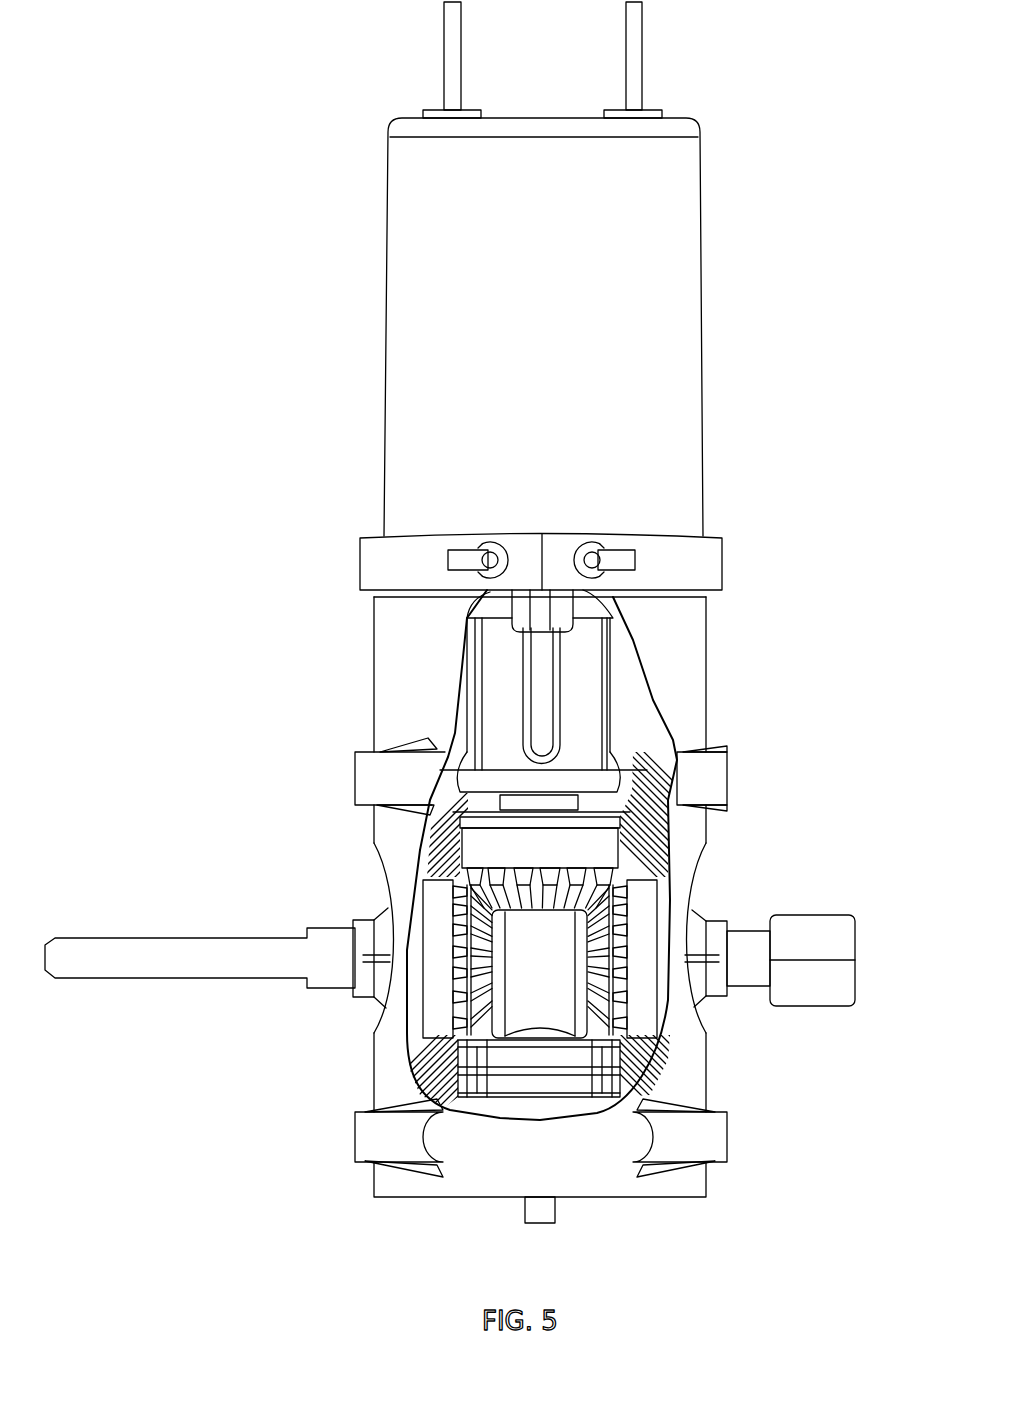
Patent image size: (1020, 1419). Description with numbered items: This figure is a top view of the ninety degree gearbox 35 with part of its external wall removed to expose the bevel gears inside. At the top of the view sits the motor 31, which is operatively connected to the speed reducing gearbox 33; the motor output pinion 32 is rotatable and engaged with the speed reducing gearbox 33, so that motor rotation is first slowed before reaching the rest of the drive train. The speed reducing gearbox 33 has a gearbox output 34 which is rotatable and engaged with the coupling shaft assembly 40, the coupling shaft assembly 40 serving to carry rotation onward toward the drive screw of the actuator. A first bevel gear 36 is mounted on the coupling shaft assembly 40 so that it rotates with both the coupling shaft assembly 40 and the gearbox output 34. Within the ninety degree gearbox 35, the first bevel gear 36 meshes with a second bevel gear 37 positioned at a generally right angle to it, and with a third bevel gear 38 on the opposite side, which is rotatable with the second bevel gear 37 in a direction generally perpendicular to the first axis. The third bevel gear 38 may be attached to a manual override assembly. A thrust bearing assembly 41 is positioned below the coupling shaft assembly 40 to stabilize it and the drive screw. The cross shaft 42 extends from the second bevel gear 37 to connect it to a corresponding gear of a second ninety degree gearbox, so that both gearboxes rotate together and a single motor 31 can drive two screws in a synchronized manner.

The motor 31 is at (693, 352).
The motor output pinion 32 is at (520, 605).
The speed reducing gearbox 33 is at (721, 685).
The gearbox output 34 is at (572, 818).
The 90 degree gearbox 35 is at (736, 893).
The first bevel gear 36 is at (540, 868).
The second bevel gear 37 is at (457, 959).
The third bevel gear 38 is at (624, 959).
The coupling shaft assembly 40 is at (539, 974).
The thrust bearing assembly 41 is at (607, 1058).
The cross shaft 42 is at (252, 945).